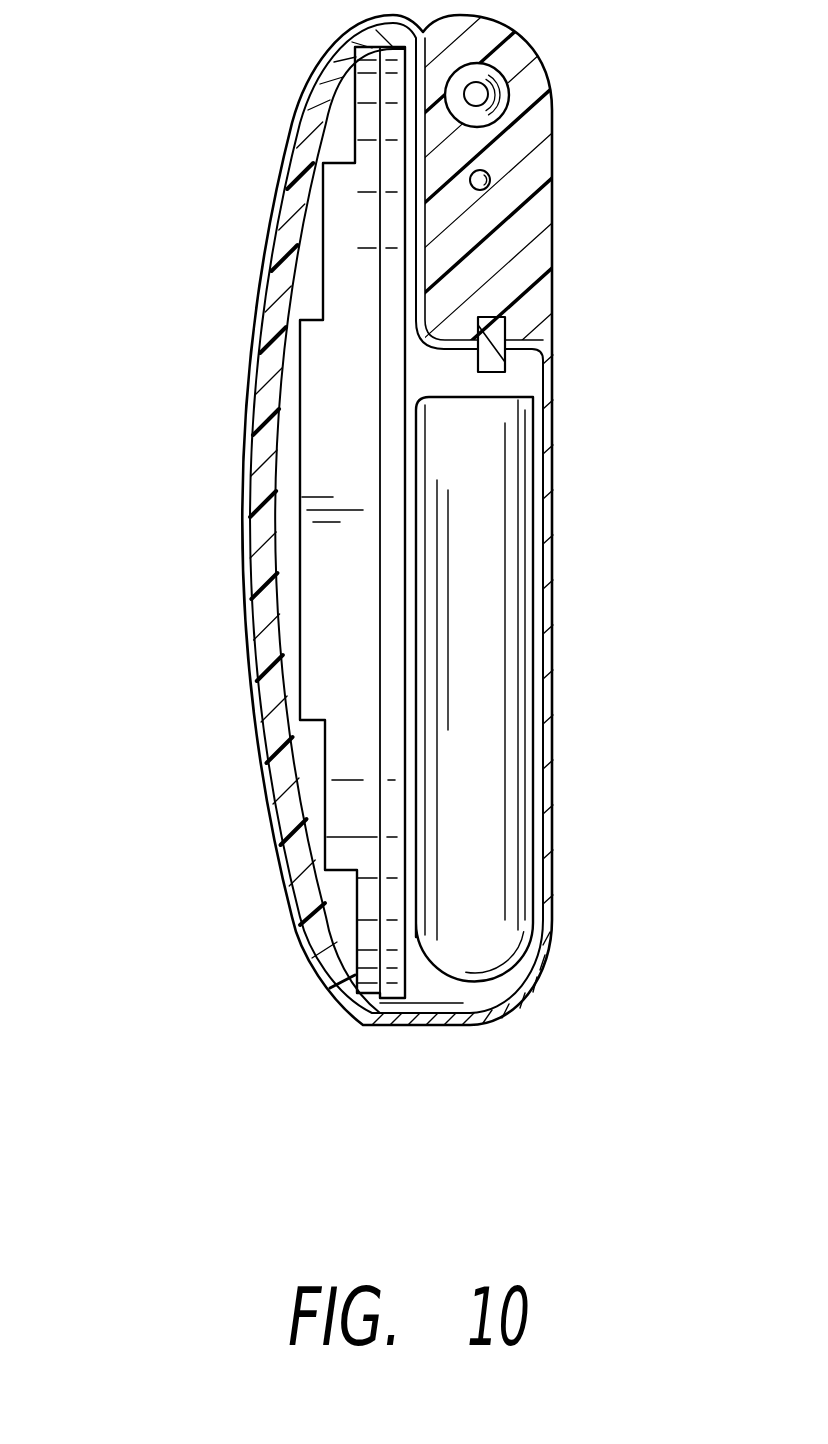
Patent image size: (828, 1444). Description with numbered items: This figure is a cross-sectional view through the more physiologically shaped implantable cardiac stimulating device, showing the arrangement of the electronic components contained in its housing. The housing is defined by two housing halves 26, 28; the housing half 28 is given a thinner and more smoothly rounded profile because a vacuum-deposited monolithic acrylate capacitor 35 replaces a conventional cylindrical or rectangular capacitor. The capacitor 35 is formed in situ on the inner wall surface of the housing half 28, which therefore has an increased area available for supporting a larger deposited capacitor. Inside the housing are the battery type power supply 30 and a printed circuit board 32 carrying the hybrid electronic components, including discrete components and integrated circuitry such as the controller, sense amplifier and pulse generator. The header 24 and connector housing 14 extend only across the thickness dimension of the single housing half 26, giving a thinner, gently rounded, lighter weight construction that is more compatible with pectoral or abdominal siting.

The connector housing 14 is at (537, 180).
The header 24 is at (505, 357).
The housing half 26 is at (685, 643).
The housing half 28 is at (247, 600).
The battery type power supply 30 is at (492, 776).
The printed circuit board 32 is at (390, 205).
The deposited monolithic capacitor 35 is at (267, 447).